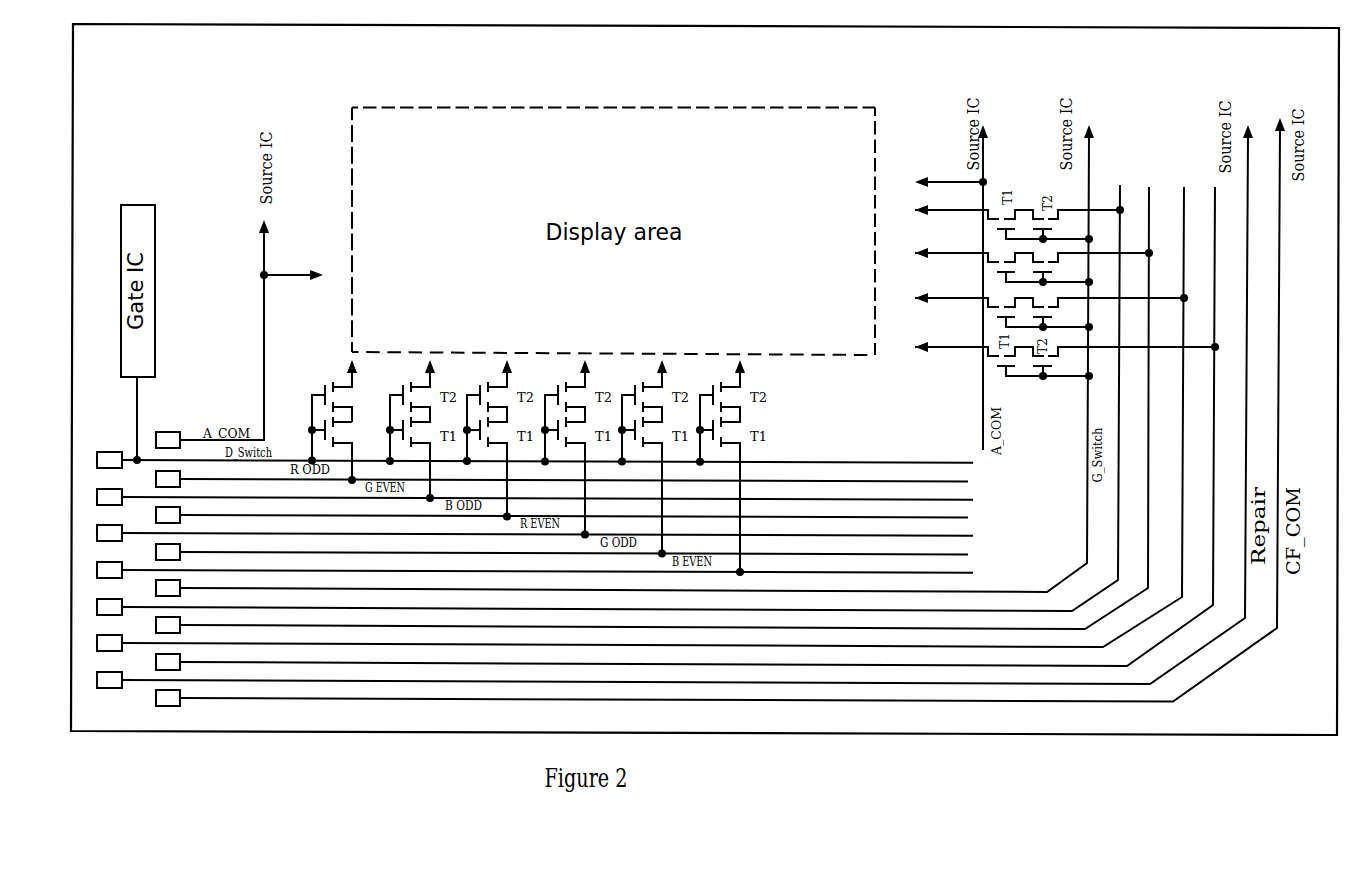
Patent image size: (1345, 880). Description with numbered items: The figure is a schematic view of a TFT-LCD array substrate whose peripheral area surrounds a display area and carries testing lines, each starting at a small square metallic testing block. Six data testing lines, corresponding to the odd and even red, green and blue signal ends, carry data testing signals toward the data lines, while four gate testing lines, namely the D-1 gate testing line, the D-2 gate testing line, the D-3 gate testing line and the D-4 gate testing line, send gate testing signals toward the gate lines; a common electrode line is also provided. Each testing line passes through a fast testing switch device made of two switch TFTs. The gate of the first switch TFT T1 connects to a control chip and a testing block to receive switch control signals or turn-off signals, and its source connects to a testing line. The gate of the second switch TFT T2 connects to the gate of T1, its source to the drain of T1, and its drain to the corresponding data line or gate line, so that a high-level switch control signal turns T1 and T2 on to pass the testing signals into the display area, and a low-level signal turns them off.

The first switch TFT T1 is at (352, 450).
The second switch TFT T2 is at (352, 391).
The D-1 gate testing line D-1 is at (631, 398).
The D-2 gate testing line D-2 is at (674, 408).
The D-3 gate testing line D-3 is at (663, 417).
The D-4 gate testing line D-4 is at (707, 426).